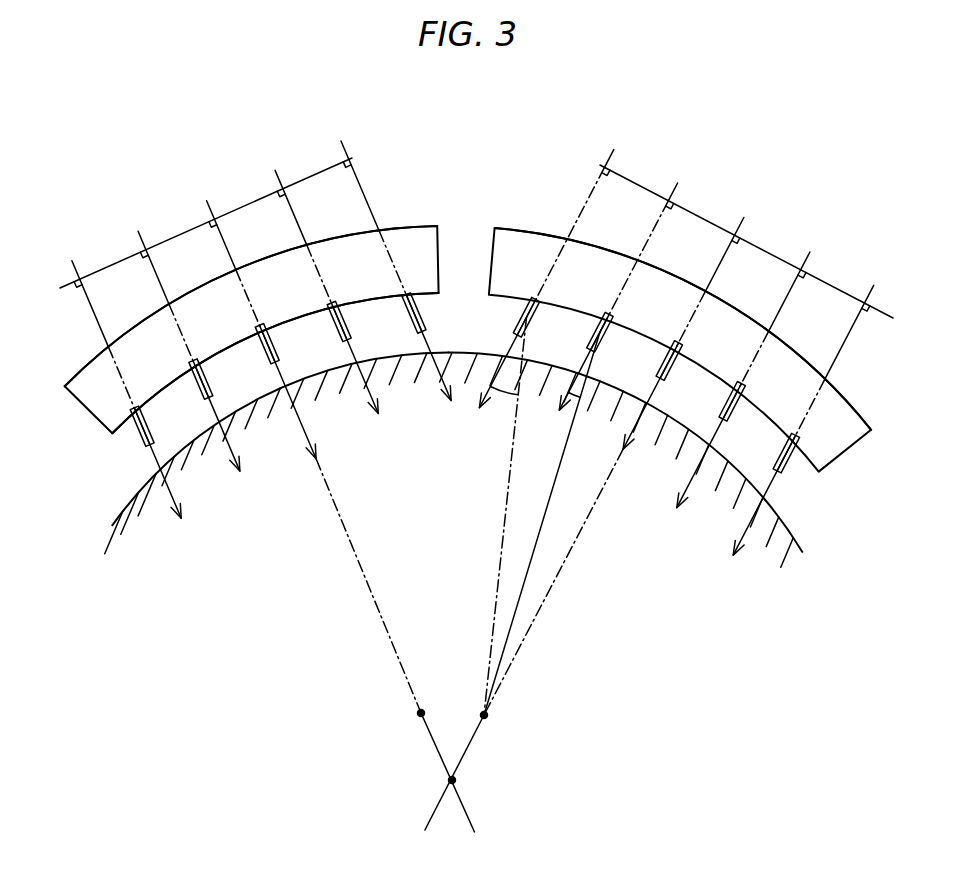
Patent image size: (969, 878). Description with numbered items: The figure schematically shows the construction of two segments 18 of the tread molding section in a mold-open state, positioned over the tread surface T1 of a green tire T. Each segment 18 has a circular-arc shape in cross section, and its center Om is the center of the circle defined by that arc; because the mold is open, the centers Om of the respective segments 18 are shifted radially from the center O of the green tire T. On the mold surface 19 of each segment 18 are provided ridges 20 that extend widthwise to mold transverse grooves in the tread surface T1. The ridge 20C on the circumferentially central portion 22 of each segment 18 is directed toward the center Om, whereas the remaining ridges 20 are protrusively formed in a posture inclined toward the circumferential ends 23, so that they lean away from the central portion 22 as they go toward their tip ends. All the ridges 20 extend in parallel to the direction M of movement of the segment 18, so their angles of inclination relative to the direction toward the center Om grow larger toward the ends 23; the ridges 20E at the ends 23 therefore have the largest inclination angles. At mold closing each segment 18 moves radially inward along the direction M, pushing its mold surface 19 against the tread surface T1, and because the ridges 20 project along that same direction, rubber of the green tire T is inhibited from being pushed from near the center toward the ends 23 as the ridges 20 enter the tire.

The segment 18 is at (341, 226).
The mold surface 19 is at (178, 392).
The ridge 20 is at (140, 441).
The ridge on circumferentially central portion 20C is at (270, 356).
The ridge at end of segment 20E is at (418, 292).
The circumferentially central portion 22 is at (241, 286).
The end of segment 23 is at (102, 370).
The direction of movement M is at (237, 267).
The tread surface T1 is at (131, 497).
The green tire T is at (787, 540).
The center of segment Om is at (410, 726).
The center of green tire O is at (469, 786).